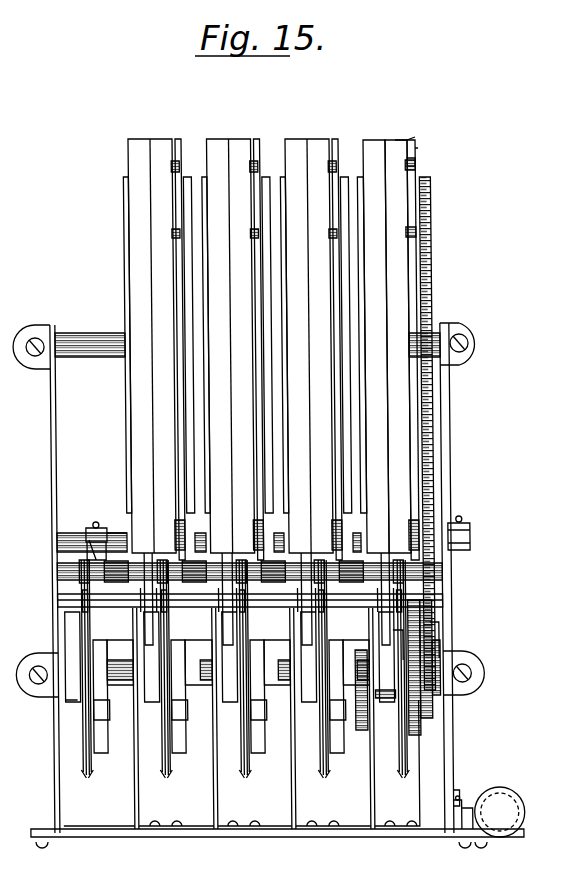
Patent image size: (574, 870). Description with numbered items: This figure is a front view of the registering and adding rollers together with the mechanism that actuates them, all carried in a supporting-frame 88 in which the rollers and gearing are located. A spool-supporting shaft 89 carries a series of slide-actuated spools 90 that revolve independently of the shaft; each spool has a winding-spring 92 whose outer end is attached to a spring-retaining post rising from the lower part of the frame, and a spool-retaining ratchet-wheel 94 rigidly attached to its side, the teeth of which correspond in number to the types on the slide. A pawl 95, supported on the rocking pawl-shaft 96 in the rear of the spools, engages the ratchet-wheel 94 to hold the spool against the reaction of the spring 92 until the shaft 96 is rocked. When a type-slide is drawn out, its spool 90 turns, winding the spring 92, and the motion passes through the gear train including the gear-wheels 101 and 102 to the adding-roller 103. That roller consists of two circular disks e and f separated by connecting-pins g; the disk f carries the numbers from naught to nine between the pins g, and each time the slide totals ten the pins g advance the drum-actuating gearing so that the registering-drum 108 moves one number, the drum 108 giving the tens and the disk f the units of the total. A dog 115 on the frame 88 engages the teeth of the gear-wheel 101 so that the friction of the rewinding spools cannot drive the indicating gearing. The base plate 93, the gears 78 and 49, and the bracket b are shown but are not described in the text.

The registering-drum 108 is at (380, 142).
The indicating disk f is at (401, 130).
The adding-roller 103 is at (414, 140).
The circular disk e is at (420, 148).
The connecting-pins g is at (415, 163).
The gear-wheel 102 is at (430, 210).
The supporting-frame 88 is at (447, 423).
The pawl 95 is at (86, 540).
The rocking pawl-shaft 96 is at (116, 534).
The gear-wheel 101 is at (430, 553).
The dog 115 is at (434, 630).
The spool-supporting shaft 89 is at (238, 679).
The winding-spring 92 is at (72, 700).
The slide-actuated spools 90 is at (243, 676).
The spool-retaining ratchet-wheel 94 is at (362, 730).
The base plate 93 is at (290, 812).
The gear wheel 78 is at (427, 712).
The gear 49 is at (435, 694).
The bracket b is at (461, 799).